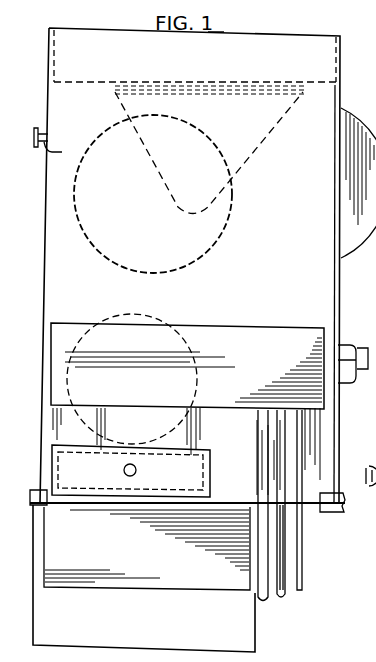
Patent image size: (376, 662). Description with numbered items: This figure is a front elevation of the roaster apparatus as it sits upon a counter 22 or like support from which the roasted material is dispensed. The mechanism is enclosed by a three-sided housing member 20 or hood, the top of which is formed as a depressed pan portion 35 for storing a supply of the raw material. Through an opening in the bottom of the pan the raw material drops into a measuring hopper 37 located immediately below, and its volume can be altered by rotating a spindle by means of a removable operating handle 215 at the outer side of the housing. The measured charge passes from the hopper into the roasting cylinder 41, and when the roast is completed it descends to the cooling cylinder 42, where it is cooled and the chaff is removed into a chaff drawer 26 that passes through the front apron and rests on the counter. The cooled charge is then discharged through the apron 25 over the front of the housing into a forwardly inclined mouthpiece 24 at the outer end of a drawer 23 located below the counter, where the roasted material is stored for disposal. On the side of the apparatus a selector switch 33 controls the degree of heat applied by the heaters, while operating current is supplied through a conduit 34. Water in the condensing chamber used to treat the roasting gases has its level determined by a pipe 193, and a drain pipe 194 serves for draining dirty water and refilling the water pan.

The housing member 20 is at (316, 290).
The counter 22 is at (333, 516).
The drawer 23 is at (240, 626).
The mouthpiece 24 is at (110, 577).
The apron 25 is at (305, 398).
The chaff drawer 26 is at (186, 474).
The selector switch 33 is at (345, 345).
The conduit 34 is at (304, 566).
The pan portion 35 is at (316, 61).
The measuring hopper 37 is at (121, 104).
The roasting cylinder 41 is at (212, 250).
The cooling cylinder 42 is at (165, 321).
The pipe 193 is at (260, 594).
The drain pipe 194 is at (278, 598).
The operating handle 215 is at (61, 140).